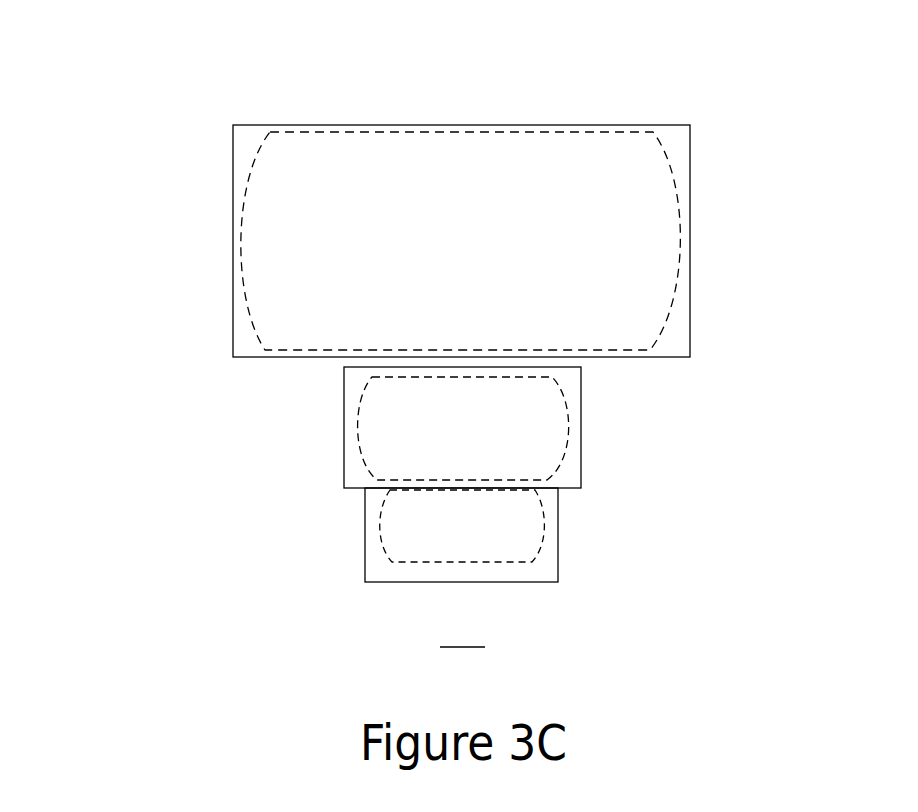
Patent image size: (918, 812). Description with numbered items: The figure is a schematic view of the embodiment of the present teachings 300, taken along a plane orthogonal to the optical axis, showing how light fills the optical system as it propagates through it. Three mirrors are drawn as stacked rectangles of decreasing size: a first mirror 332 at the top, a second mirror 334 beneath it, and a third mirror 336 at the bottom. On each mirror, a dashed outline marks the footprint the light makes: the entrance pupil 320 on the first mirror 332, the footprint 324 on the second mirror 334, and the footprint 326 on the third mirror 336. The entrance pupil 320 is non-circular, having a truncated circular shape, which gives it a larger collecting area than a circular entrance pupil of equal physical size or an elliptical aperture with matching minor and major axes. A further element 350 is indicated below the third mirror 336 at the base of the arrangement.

The embodiment of the present teachings 300 is at (133, 83).
The entrance pupil 320 is at (672, 308).
The first mirror 332 is at (690, 167).
The footprint on second mirror 324 is at (360, 415).
The second mirror 334 is at (581, 403).
The footprint on third mirror 326 is at (383, 512).
The third mirror 336 is at (558, 543).
The base surface 350 is at (448, 647).